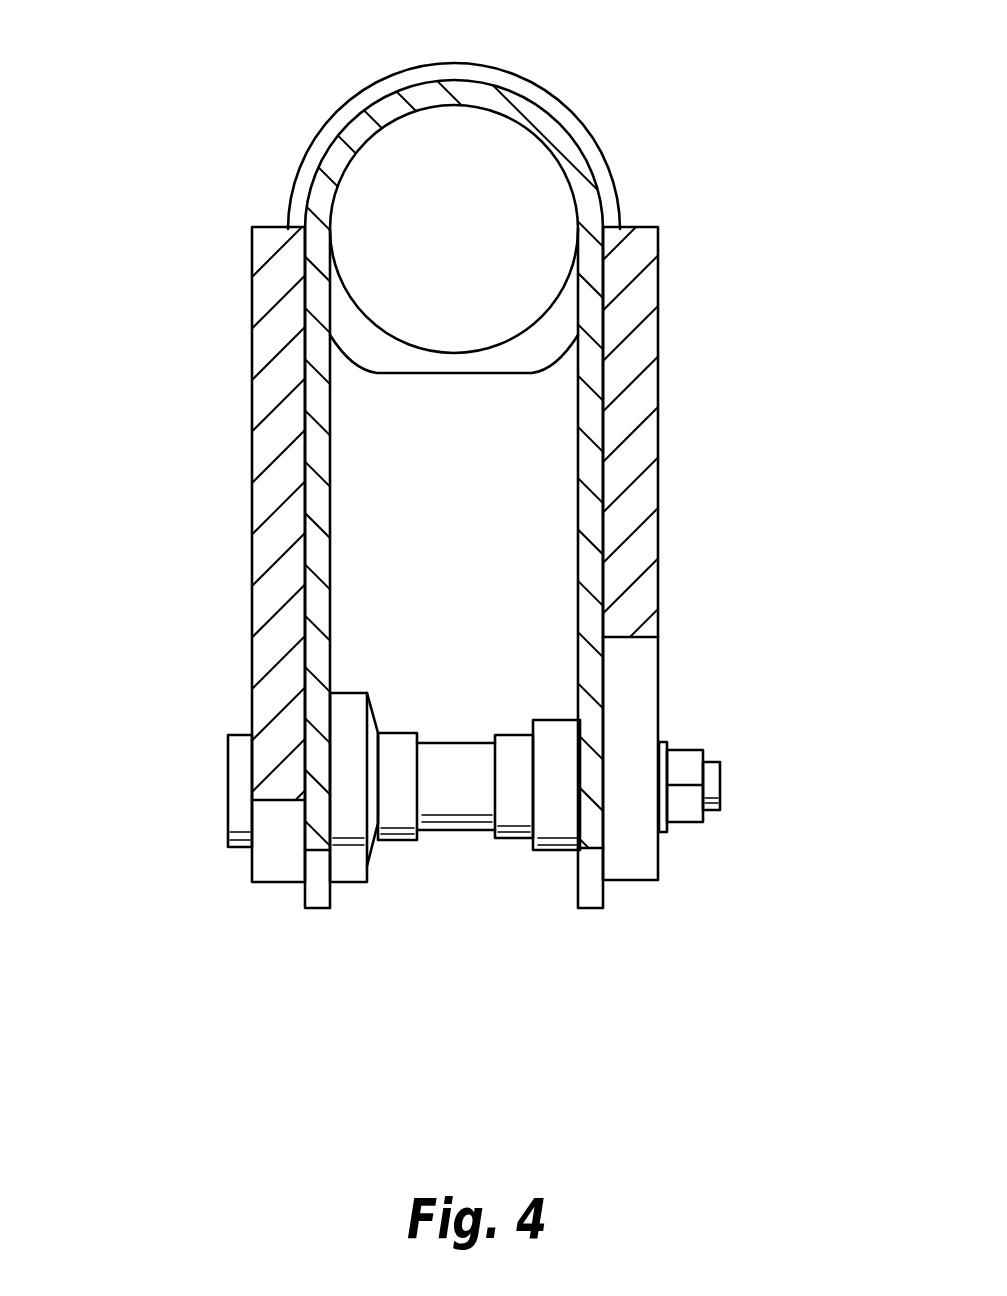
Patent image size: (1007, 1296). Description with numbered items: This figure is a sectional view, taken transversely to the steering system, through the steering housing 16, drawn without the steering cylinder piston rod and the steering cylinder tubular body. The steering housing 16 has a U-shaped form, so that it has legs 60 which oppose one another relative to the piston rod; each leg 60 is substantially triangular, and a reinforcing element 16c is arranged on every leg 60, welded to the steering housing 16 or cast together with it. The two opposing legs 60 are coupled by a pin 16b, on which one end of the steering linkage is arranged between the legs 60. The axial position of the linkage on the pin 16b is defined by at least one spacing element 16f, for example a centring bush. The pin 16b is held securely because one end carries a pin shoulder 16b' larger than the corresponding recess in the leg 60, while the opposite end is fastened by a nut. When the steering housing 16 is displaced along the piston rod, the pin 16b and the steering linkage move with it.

The steering housing 16 is at (552, 127).
The pin 16b is at (455, 704).
The pin shoulder 16b' is at (182, 856).
The reinforcing element 16c is at (278, 425).
The spacing element 16f is at (350, 853).
The leg 60 is at (315, 503).